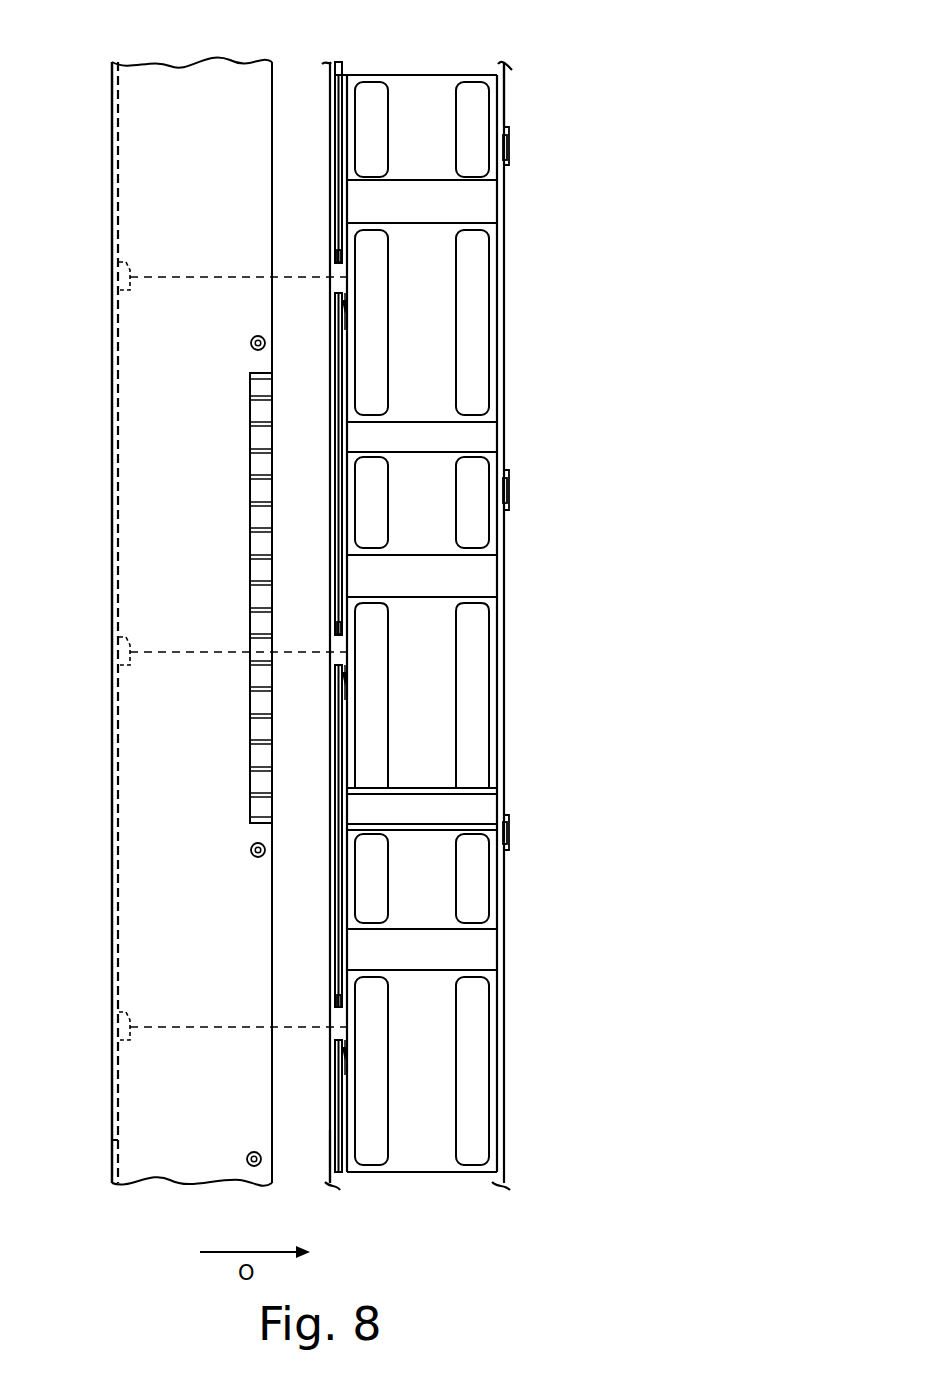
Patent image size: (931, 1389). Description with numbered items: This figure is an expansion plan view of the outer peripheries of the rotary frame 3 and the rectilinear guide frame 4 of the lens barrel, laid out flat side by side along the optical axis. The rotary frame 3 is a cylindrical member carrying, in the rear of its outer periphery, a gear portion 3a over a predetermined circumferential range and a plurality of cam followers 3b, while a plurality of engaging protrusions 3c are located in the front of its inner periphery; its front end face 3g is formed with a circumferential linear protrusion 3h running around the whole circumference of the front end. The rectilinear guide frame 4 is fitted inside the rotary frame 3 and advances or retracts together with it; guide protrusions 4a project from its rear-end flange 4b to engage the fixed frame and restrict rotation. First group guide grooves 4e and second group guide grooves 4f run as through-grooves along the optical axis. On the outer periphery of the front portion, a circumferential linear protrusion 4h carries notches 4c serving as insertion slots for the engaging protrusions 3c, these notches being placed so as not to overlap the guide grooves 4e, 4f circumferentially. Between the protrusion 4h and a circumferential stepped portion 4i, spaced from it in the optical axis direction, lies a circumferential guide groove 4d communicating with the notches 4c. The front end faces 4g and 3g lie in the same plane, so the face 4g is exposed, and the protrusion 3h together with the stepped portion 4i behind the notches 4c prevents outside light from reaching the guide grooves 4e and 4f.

The rotary frame 3 is at (196, 72).
The gear portion 3a is at (263, 700).
The cam followers 3b is at (264, 338).
The engaging protrusions 3c is at (112, 262).
The front end face 3g is at (112, 1143).
The circumferential linear protrusion 3h is at (112, 458).
The rectilinear guide frame 4 is at (425, 85).
The guide protrusions 4a is at (510, 150).
The rear-end flange 4b is at (506, 95).
The notches 4c is at (345, 272).
The circumferential guide groove 4d is at (345, 328).
The first group guide grooves 4e is at (472, 207).
The second group guide grooves 4f is at (472, 437).
The front end face 4g is at (323, 1135).
The circumferential linear protrusion 4h is at (345, 160).
The circumferential stepped portion 4i is at (345, 495).